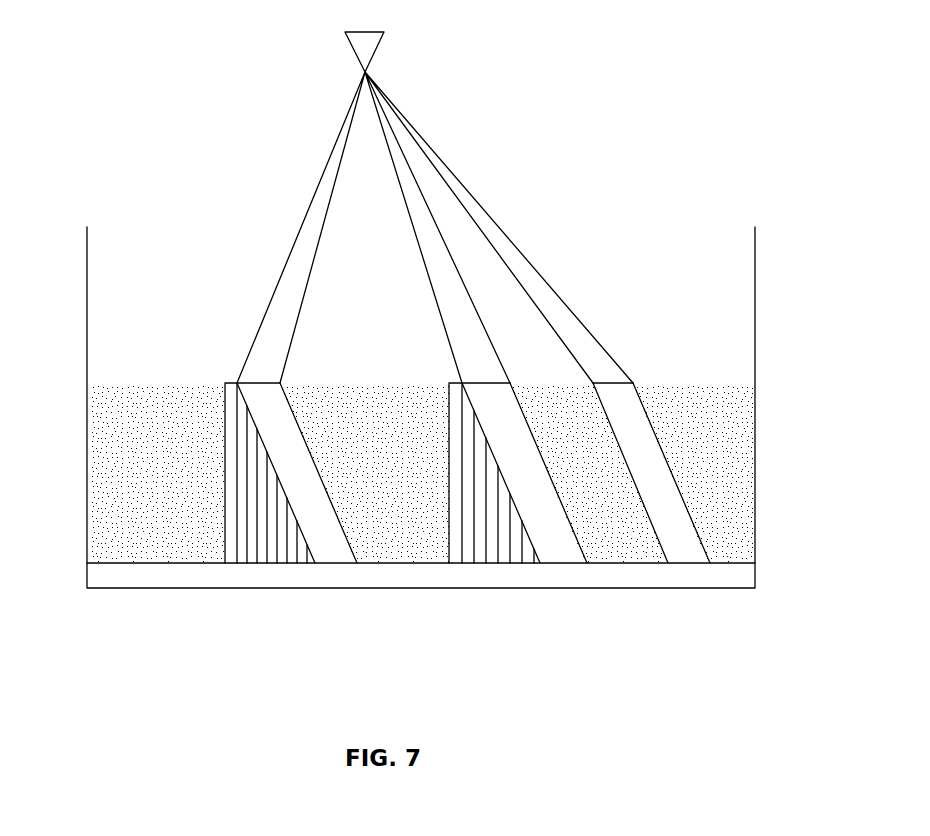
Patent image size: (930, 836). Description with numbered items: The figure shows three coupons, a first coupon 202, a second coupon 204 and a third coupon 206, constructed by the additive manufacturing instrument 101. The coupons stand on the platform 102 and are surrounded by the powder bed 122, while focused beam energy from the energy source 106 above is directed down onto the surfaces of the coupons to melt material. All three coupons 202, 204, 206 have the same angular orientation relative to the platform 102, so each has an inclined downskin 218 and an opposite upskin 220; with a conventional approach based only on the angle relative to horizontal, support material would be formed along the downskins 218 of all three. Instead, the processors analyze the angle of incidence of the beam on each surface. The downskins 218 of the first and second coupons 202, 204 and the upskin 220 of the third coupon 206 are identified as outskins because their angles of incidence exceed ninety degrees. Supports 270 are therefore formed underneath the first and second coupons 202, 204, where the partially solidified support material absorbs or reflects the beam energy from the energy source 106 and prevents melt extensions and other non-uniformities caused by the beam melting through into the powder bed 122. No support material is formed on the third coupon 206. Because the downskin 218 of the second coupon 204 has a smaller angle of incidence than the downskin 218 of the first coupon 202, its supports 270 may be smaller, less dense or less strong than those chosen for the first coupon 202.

The additive manufacturing instrument 101 is at (122, 111).
The platform 102 is at (168, 575).
The energy source 106 is at (348, 50).
The powder bed 122 is at (107, 503).
The first coupon 202 is at (303, 502).
The second coupon 204 is at (527, 482).
The third coupon 206 is at (653, 480).
The downskin 218 is at (268, 464).
The upskin 220 is at (320, 473).
The supports 270 is at (240, 465).